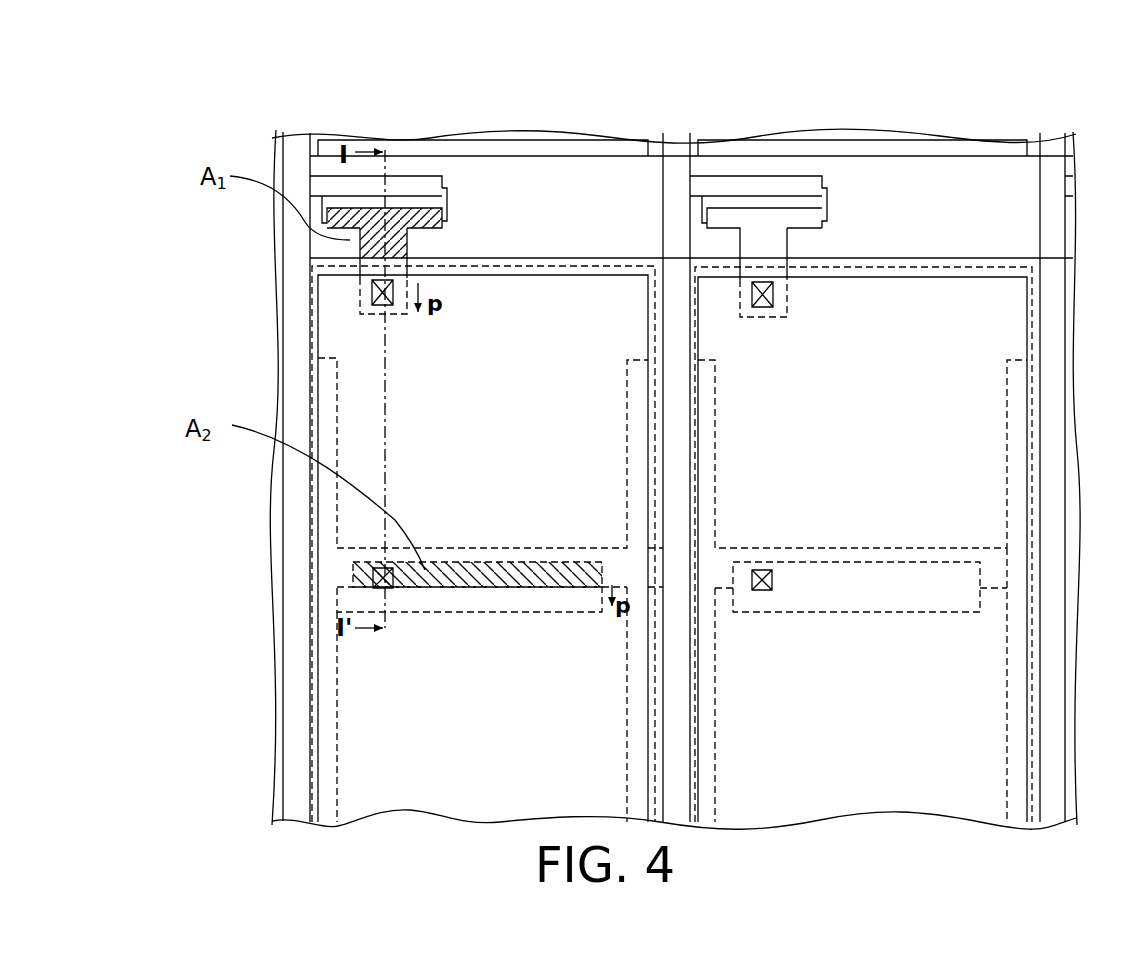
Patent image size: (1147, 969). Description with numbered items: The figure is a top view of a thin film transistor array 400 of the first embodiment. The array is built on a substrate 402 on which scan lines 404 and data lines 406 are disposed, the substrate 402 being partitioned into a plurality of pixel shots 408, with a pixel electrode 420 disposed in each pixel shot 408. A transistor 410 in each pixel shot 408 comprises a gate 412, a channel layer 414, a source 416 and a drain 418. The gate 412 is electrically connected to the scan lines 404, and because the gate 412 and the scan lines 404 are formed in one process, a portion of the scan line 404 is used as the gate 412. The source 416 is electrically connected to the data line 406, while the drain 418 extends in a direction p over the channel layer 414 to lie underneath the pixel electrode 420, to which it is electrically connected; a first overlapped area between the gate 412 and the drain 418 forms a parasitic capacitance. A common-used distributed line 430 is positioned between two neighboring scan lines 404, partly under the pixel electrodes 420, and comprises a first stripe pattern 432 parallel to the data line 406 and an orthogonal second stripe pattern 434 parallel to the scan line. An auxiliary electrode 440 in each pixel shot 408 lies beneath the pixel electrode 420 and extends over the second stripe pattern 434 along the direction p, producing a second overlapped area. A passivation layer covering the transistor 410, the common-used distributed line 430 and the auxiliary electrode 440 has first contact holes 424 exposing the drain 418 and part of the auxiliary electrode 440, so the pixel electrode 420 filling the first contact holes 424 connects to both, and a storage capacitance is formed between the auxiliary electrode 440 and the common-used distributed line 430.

The thin film transistor array 400 is at (1143, 870).
The substrate 402 is at (407, 812).
The scan line 404 is at (610, 178).
The data line 406 is at (290, 304).
The pixel shot 408 is at (546, 266).
The transistor 410 is at (517, 49).
The gate 412 is at (452, 200).
The channel layer 414 is at (407, 200).
The source 416 is at (328, 182).
The drain 418 is at (422, 215).
The pixel electrode 420 is at (353, 710).
The first contact hole 424 is at (368, 293).
The common-used distributed line 430 is at (192, 515).
The first stripe pattern 432 is at (325, 524).
The second stripe pattern 434 is at (343, 569).
The auxiliary electrode 440 is at (337, 598).